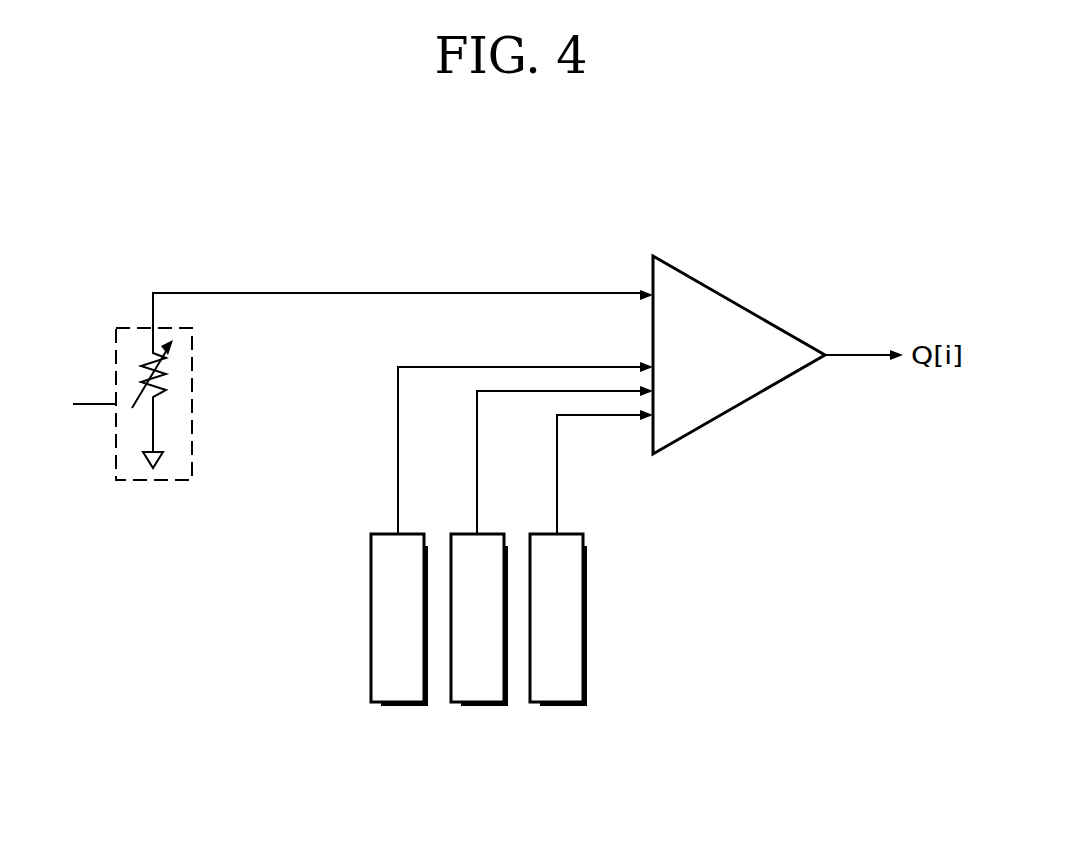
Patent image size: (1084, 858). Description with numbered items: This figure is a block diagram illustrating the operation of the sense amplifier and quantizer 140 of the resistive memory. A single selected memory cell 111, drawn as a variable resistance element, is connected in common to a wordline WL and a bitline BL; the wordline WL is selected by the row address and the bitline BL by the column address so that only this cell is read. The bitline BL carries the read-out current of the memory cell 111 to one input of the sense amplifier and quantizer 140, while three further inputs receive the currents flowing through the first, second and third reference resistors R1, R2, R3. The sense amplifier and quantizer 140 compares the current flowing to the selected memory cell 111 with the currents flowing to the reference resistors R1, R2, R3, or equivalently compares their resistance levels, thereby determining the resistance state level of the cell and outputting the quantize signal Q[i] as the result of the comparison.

The memory cell 111 is at (192, 404).
The sense amplifier and quantizer 140 is at (738, 302).
The first reference resistor R1 is at (512, 533).
The second reference resistor R2 is at (552, 545).
The third reference resistor R3 is at (591, 557).
The bitline BL is at (403, 295).
The wordline WL is at (75, 404).